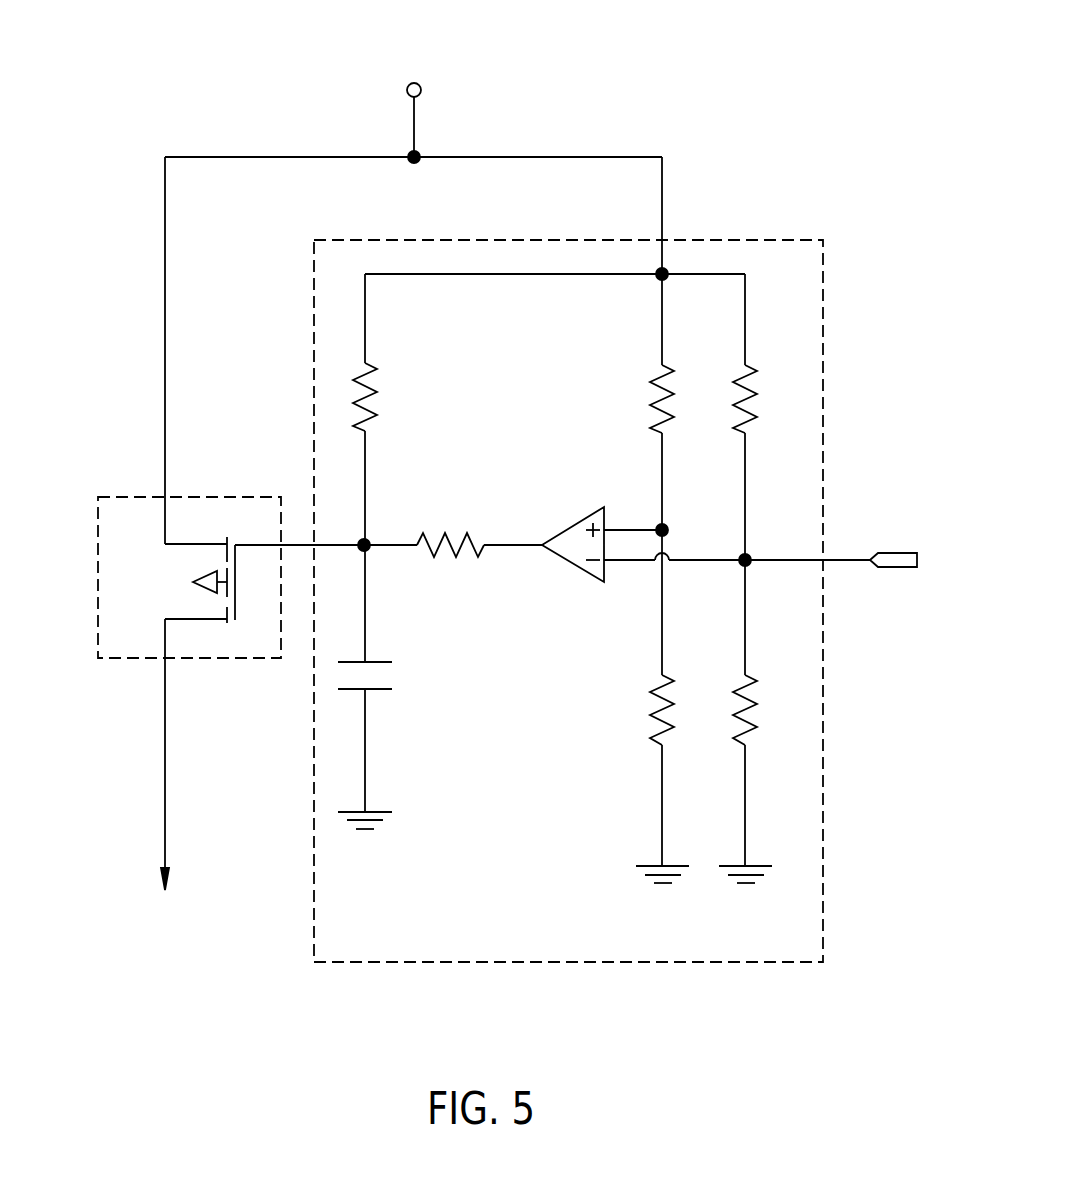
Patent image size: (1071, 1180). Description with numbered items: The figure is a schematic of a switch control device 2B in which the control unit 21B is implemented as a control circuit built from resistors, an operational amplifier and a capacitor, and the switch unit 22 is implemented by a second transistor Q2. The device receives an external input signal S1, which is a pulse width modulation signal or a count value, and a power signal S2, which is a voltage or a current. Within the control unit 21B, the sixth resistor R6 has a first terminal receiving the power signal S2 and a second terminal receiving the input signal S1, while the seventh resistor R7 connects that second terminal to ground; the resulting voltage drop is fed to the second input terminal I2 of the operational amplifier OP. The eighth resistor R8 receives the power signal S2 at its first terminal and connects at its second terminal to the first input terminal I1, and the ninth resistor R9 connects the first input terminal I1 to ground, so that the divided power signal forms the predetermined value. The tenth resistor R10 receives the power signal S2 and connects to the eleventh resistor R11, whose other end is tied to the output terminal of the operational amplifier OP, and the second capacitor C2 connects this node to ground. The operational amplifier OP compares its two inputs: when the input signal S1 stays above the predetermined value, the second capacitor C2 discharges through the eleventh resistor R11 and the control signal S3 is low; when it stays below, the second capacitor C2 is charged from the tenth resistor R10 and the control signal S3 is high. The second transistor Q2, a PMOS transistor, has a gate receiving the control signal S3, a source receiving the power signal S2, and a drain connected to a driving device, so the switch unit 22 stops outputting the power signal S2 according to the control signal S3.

The switch control device 2B is at (124, 34).
The control unit 21B is at (789, 240).
The switch unit 22 is at (113, 497).
The second transistor Q2 is at (193, 582).
The input signal S1 is at (845, 559).
The power signal S2 is at (225, 866).
The control signal S3 is at (300, 541).
The sixth resistor R6 is at (724, 462).
The seventh resistor R7 is at (734, 721).
The eighth resistor R8 is at (641, 447).
The ninth resistor R9 is at (649, 706).
The tenth resistor R10 is at (392, 454).
The eleventh resistor R11 is at (479, 525).
The second capacitor C2 is at (381, 687).
The operational amplifier OP is at (562, 534).
The first input terminal I1 is at (636, 519).
The second input terminal I2 is at (674, 570).